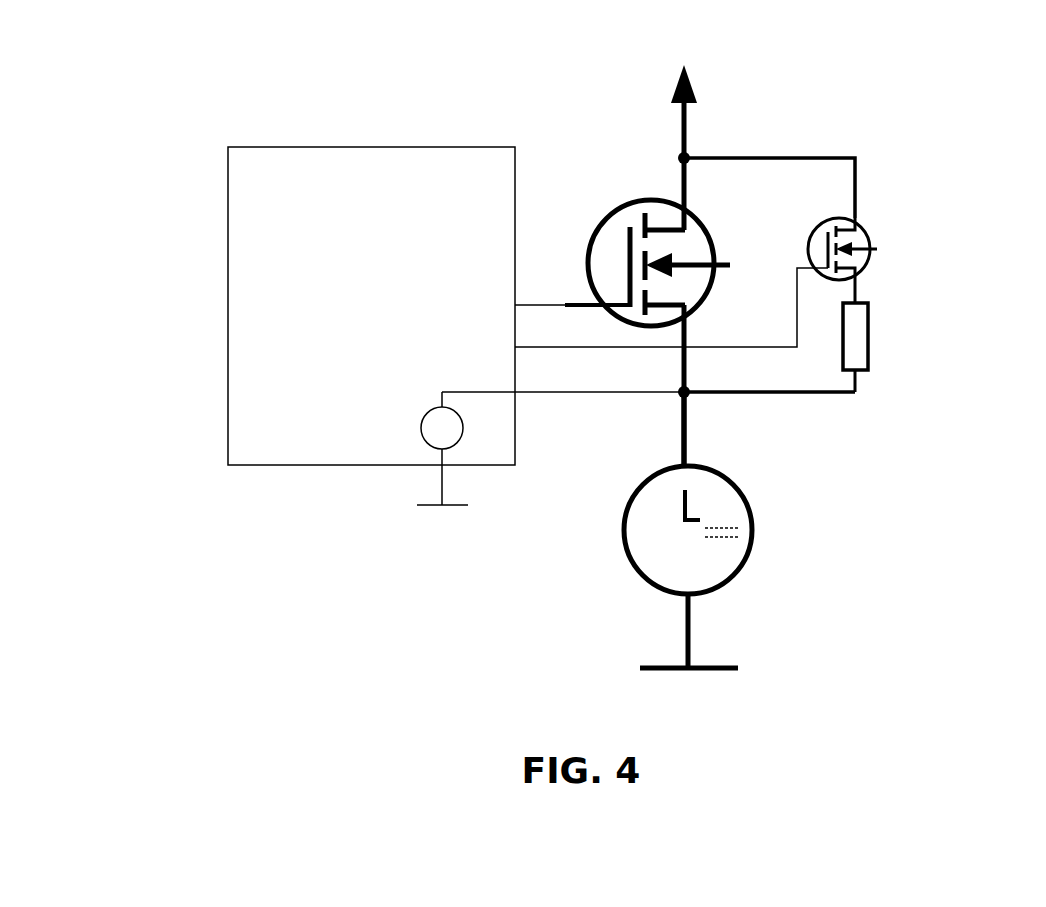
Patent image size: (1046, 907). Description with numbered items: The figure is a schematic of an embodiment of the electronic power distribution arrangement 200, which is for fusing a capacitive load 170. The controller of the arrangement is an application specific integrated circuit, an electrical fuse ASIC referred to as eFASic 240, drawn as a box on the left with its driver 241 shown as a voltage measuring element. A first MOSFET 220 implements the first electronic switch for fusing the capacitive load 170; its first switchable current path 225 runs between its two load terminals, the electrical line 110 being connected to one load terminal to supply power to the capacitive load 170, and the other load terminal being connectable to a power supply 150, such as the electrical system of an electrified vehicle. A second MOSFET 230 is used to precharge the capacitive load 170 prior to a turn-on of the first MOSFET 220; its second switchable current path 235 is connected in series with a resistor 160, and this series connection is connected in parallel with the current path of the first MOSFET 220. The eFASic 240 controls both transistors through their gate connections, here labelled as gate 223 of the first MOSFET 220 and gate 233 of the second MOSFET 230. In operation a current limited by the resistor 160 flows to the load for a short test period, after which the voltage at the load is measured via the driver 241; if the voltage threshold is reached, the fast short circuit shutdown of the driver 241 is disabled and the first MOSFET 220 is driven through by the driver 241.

The electronic power distribution arrangement 200 is at (110, 108).
The eFASic 240 is at (295, 145).
The power supply 150 is at (700, 75).
The first MOSFET 220 is at (608, 195).
The gate of main power transistor 223 is at (573, 297).
The first switchable current path 225 is at (665, 290).
The second MOSFET 230 is at (876, 222).
The gate of sense transistor 233 is at (797, 262).
The second switchable current path 235 is at (856, 262).
The resistor 160 is at (878, 333).
The electrical line 110 is at (697, 428).
The capacitive load 170 is at (762, 528).
The driver 241 is at (428, 408).